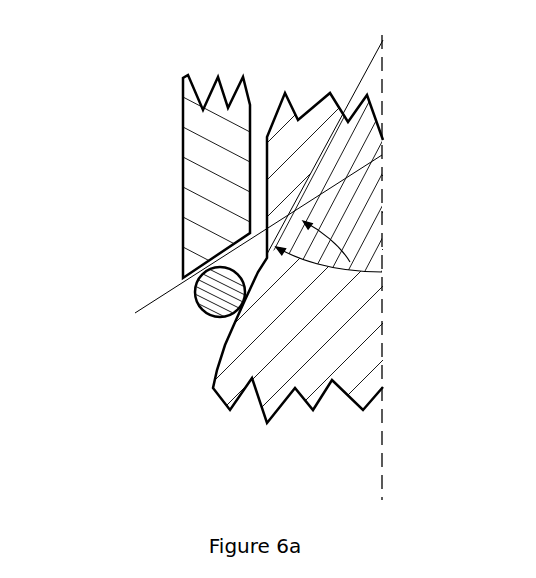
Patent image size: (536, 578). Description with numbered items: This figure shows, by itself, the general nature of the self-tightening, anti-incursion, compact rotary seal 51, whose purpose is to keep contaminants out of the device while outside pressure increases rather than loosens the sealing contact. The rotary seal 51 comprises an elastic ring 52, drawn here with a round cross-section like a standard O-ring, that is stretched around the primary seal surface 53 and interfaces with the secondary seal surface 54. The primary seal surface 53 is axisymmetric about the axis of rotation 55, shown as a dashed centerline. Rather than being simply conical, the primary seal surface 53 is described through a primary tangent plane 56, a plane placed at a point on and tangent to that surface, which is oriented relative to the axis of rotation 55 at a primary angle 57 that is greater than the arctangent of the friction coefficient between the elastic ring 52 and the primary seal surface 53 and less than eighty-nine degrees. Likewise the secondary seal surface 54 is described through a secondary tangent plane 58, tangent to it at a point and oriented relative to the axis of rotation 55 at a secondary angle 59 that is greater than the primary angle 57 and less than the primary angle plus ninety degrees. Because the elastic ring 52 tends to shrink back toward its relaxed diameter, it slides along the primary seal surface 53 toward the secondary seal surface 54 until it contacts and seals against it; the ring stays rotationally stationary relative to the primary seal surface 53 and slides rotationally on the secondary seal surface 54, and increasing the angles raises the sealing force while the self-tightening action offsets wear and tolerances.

The rotary seal 51 is at (152, 222).
The elastic ring 52 is at (200, 308).
The primary seal surface 53 is at (212, 385).
The secondary seal surface 54 is at (158, 298).
The axis of rotation 55 is at (382, 437).
The primary tangent plane 56 is at (214, 372).
The primary angle 57 is at (348, 274).
The secondary tangent plane 58 is at (156, 306).
The secondary angle 59 is at (348, 268).